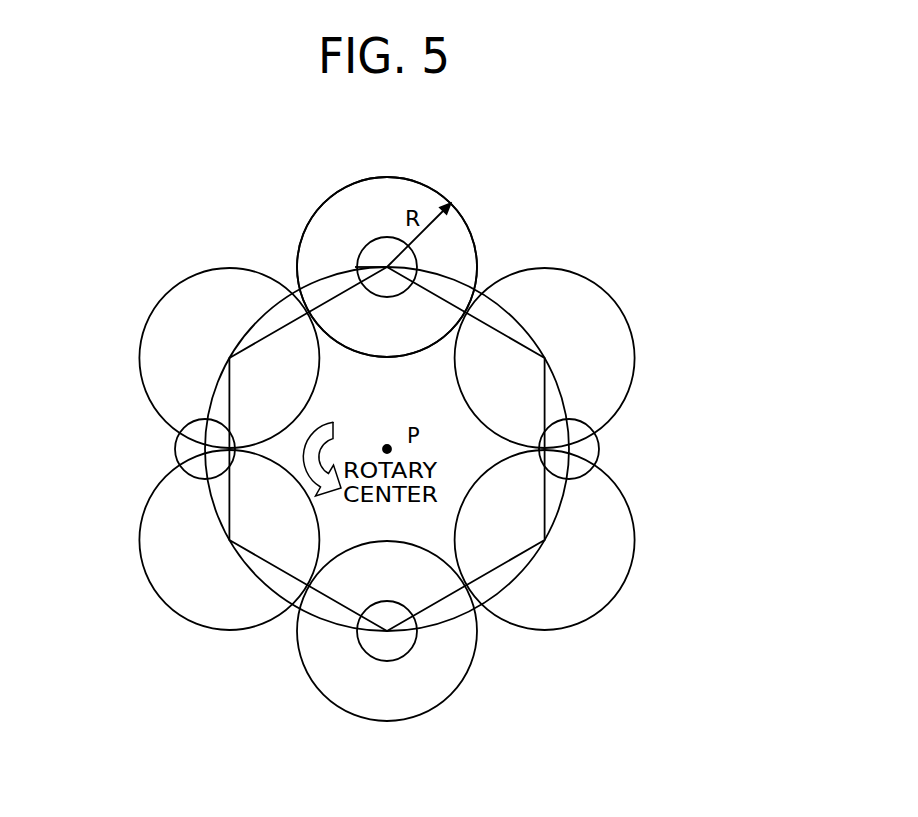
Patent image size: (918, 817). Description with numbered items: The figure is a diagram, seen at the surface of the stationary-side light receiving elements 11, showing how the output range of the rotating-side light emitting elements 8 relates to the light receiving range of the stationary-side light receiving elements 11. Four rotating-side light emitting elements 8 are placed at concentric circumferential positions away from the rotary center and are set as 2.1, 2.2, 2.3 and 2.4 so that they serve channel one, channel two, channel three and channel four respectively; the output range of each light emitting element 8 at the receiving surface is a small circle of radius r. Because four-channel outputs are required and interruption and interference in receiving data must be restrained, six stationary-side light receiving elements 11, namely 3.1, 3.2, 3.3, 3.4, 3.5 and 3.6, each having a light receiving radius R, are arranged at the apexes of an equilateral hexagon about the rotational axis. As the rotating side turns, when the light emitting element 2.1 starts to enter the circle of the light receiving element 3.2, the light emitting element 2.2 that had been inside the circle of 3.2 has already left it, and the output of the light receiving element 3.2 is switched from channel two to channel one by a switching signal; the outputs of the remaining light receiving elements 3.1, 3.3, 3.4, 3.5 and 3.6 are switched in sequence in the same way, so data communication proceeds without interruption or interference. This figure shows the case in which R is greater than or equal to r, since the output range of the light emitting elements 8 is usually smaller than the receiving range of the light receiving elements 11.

The rotating-side light emitting element for channel 1 2.1 is at (372, 245).
The rotating-side light emitting element for channel 2 2.2 is at (183, 448).
The rotating-side light emitting element for channel 3 2.3 is at (387, 647).
The rotating-side light emitting element for channel 4 2.4 is at (586, 450).
The stationary-side light receiving element 3.1 is at (403, 197).
The stationary-side light receiving element 3.2 is at (229, 358).
The stationary-side light receiving element 3.3 is at (165, 578).
The stationary-side light receiving element 3.4 is at (437, 683).
The stationary-side light receiving element 3.5 is at (573, 597).
The stationary-side light receiving element 3.6 is at (572, 298).
The rotating-side light emitting element 8 is at (372, 257).
The stationary-side light receiving element 11 is at (343, 228).